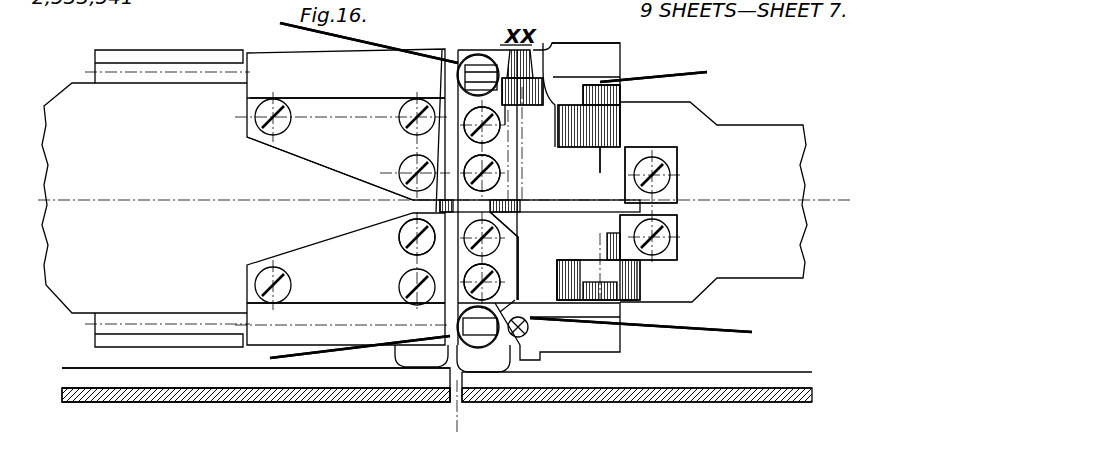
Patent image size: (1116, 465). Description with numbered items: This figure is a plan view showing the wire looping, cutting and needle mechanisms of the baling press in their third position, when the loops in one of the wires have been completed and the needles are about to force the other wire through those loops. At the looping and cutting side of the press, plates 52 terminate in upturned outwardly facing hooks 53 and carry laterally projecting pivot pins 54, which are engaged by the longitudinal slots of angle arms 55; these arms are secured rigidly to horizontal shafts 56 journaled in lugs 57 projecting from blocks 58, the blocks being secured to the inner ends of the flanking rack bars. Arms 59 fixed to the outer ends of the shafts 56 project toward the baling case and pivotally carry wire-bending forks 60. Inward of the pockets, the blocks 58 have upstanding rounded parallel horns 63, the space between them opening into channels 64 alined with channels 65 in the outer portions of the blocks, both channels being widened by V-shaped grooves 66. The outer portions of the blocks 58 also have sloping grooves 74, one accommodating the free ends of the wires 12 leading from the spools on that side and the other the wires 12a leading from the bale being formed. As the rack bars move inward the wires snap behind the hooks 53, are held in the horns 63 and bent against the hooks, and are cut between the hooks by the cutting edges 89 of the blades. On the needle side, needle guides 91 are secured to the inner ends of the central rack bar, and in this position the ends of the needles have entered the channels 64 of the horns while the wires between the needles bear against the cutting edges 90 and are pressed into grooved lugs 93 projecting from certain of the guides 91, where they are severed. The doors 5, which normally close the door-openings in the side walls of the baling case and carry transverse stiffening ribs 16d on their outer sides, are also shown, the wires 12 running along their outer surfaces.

The door 5 is at (342, 393).
The wire 12 is at (717, 332).
The wire leading from the bale 12a is at (678, 77).
The transverse stiffening rib 16d is at (262, 380).
The plate 52 is at (598, 266).
The hook 53 is at (465, 150).
The pivot pin 54 is at (675, 195).
The angle arm 55 is at (640, 133).
The horizontal shaft 56 is at (600, 143).
The lug 57 is at (620, 125).
The block 58 is at (620, 45).
The arm 59 is at (620, 92).
The wire-bending fork 60 is at (553, 52).
The horn 63 is at (440, 78).
The channel 64 is at (440, 73).
The channel 65 is at (510, 125).
The V-shaped groove 66 is at (440, 147).
The sloping groove 74 is at (620, 58).
The cutting edge 89 is at (483, 200).
The cutting edge 90 is at (440, 250).
The needle guide 91 is at (346, 321).
The grooved lug 93 is at (413, 197).